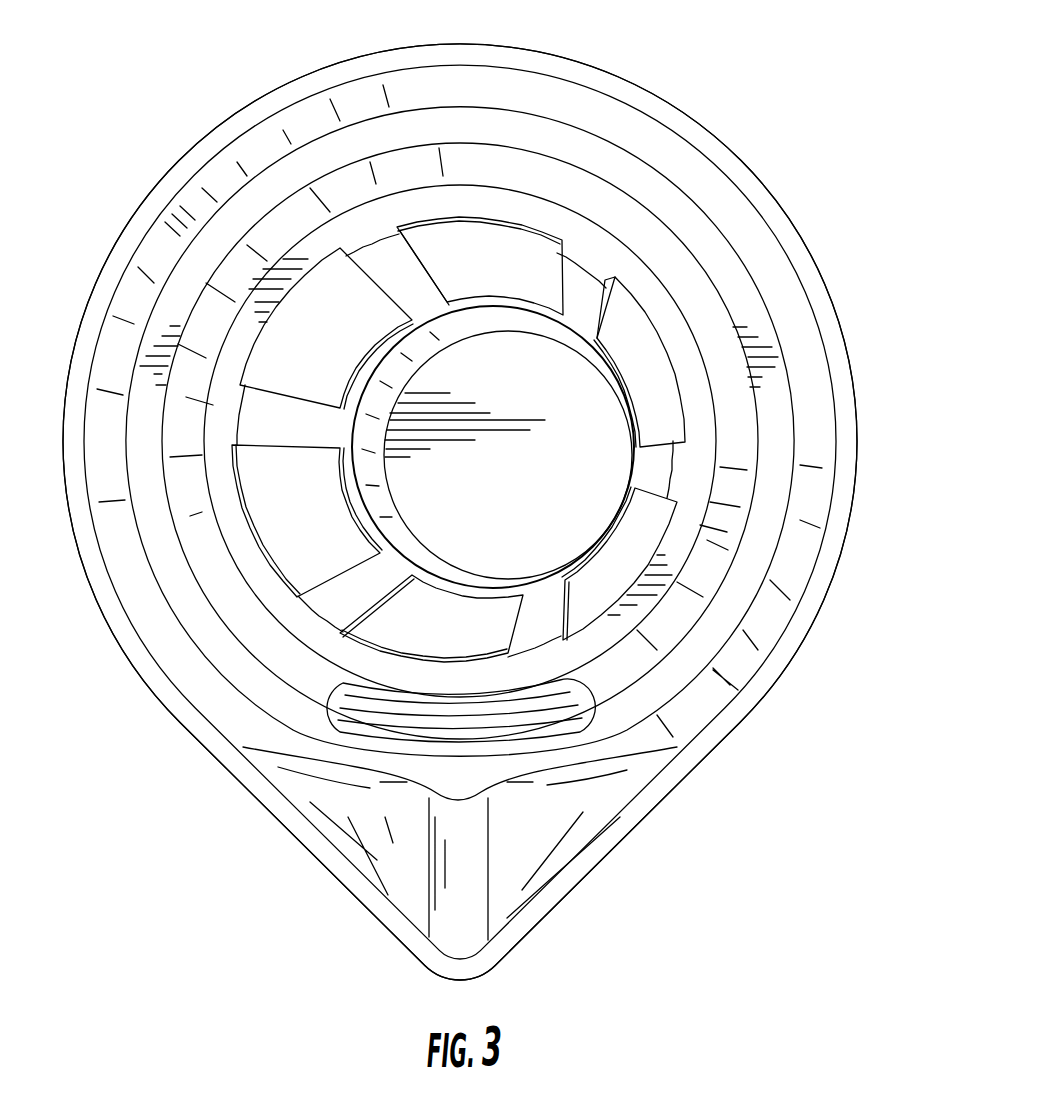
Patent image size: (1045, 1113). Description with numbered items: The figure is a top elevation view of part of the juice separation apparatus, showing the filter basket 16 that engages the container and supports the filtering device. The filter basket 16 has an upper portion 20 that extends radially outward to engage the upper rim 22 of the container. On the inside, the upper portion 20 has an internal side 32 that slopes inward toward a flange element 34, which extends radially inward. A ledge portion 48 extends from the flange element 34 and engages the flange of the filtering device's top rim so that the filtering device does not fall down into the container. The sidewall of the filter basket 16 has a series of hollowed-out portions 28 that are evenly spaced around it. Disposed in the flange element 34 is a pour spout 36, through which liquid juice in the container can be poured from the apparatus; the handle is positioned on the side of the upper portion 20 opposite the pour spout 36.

The filter basket 16 is at (138, 175).
The upper portion 20 is at (637, 84).
The upper rim 22 is at (818, 296).
The internal side 32 is at (816, 423).
The flange element 34 is at (684, 284).
The ledge portion 48 is at (352, 224).
The hollowed-out portions 28 is at (427, 267).
The pour spout 36 is at (590, 720).